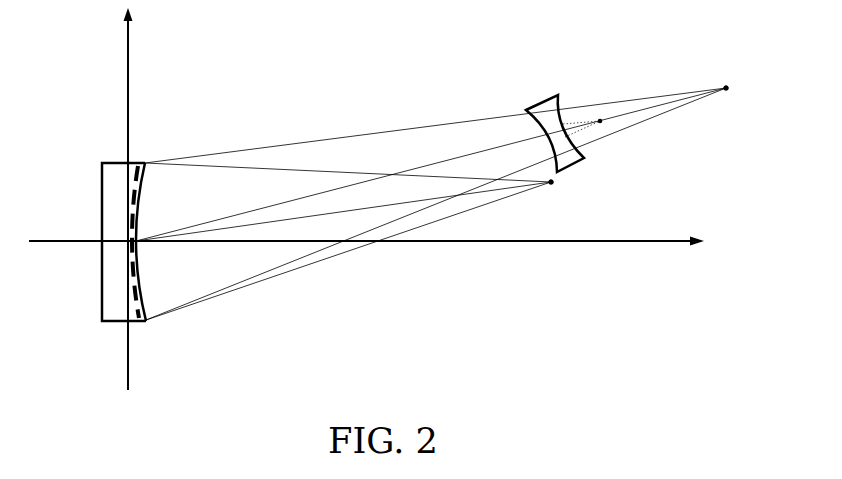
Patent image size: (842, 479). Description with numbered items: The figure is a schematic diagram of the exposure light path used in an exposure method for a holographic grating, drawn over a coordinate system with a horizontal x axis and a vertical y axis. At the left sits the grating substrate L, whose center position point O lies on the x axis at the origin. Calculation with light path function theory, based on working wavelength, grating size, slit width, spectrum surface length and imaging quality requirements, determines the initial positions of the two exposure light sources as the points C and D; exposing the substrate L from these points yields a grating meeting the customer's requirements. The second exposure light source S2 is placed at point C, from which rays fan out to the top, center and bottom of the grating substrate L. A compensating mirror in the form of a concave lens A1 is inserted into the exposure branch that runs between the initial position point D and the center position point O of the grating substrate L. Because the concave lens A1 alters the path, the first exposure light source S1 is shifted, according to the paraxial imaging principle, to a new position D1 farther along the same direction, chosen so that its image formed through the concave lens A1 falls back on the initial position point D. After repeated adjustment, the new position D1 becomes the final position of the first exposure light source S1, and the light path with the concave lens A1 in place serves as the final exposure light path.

The grating substrate L is at (102, 210).
The center position point of the grating substrate O is at (123, 252).
The concave lens A1 is at (535, 106).
The initial position point D is at (587, 132).
The new position D1 is at (725, 76).
The first exposure light source S1 is at (731, 101).
The second exposure light source S2 is at (566, 186).
The initial position point C is at (548, 195).
The x axis x is at (366, 254).
The y axis y is at (122, 199).